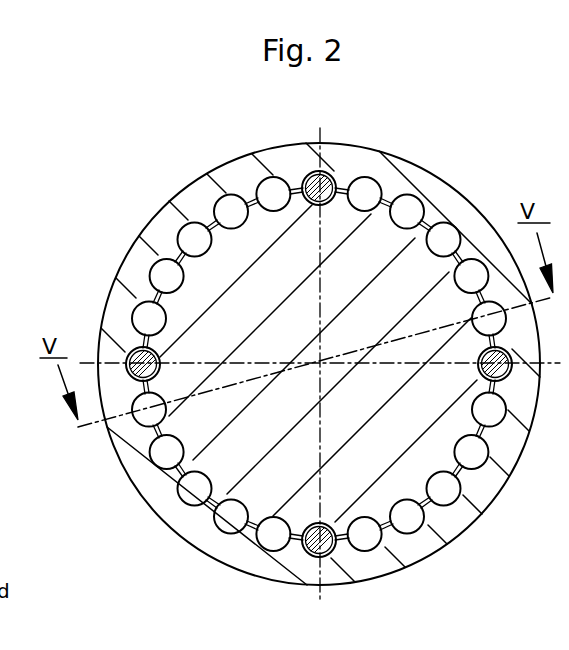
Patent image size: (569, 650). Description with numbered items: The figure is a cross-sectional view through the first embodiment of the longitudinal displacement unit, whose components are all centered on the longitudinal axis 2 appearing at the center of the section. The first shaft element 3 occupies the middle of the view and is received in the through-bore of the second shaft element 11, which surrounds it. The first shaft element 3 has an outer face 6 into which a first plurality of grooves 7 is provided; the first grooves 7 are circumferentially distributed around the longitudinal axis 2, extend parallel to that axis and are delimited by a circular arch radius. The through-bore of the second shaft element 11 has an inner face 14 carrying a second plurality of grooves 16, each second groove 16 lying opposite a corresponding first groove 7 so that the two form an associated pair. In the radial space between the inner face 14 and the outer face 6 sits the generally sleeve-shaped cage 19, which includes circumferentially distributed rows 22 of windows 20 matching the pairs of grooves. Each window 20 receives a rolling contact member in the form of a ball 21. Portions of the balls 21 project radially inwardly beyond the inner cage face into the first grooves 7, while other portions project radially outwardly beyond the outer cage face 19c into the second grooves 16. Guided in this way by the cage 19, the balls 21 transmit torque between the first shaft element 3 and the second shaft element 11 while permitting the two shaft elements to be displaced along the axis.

The longitudinal axis 2 is at (313, 368).
The first shaft element 3 is at (377, 330).
The outer face 6 is at (256, 540).
The first grooves 7 is at (185, 472).
The second shaft element 11 is at (362, 186).
The inner face 14 is at (426, 228).
The second grooves 16 is at (298, 432).
The cage 19 is at (177, 233).
The outer cage face 19c is at (247, 184).
The windows 20 is at (385, 168).
The balls 21 is at (372, 175).
The rows of windows 22 is at (358, 170).